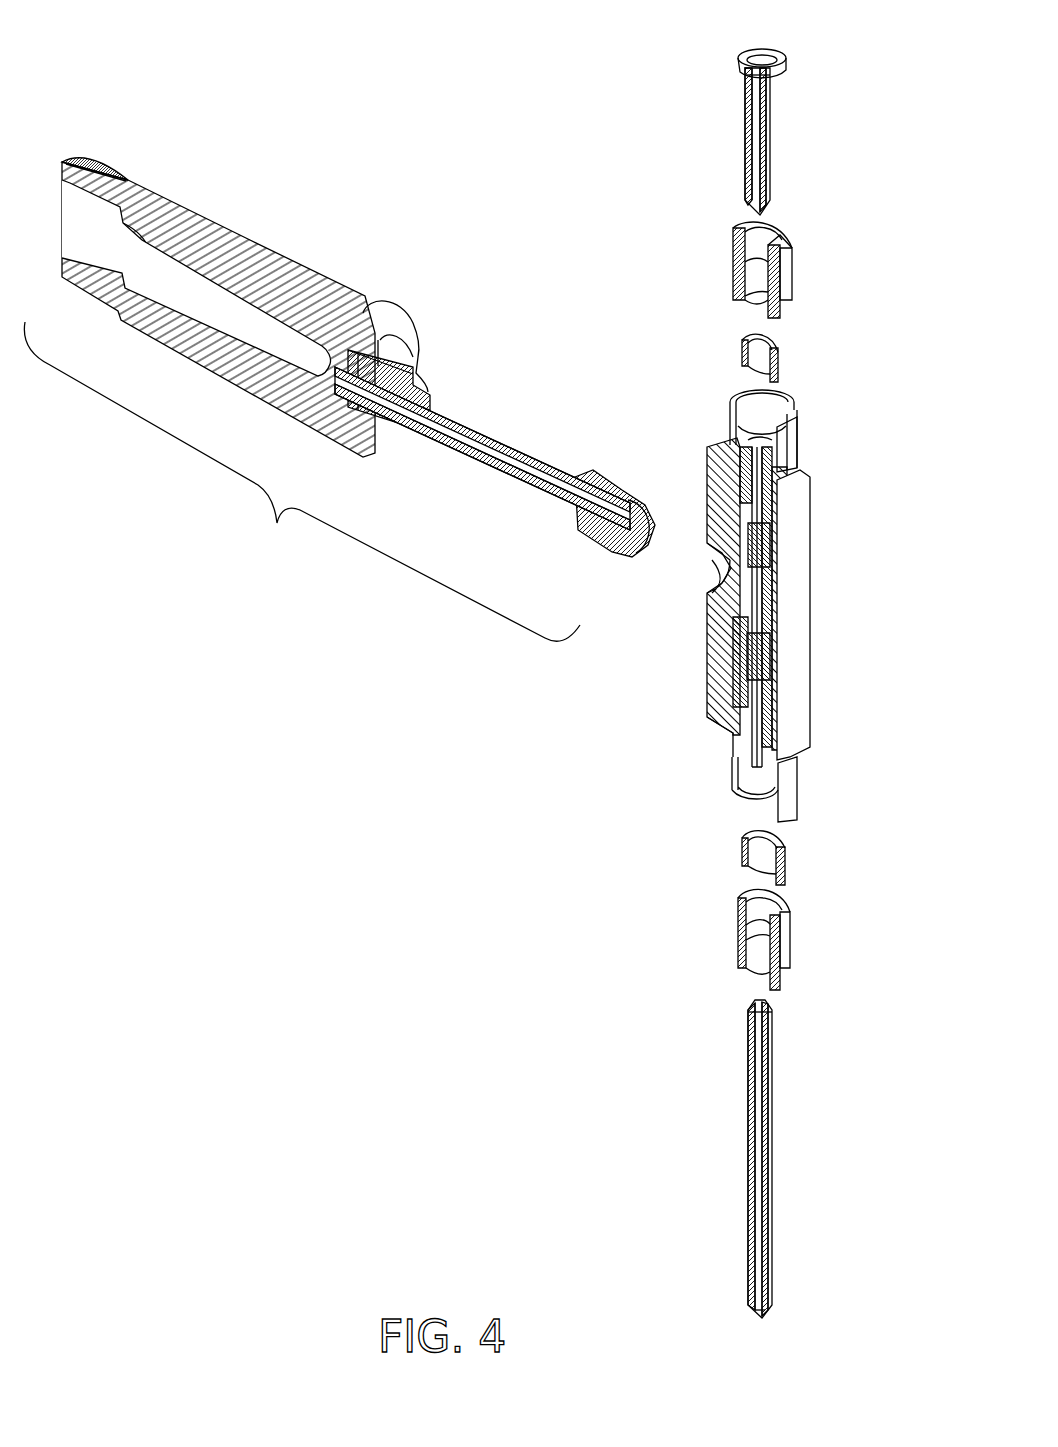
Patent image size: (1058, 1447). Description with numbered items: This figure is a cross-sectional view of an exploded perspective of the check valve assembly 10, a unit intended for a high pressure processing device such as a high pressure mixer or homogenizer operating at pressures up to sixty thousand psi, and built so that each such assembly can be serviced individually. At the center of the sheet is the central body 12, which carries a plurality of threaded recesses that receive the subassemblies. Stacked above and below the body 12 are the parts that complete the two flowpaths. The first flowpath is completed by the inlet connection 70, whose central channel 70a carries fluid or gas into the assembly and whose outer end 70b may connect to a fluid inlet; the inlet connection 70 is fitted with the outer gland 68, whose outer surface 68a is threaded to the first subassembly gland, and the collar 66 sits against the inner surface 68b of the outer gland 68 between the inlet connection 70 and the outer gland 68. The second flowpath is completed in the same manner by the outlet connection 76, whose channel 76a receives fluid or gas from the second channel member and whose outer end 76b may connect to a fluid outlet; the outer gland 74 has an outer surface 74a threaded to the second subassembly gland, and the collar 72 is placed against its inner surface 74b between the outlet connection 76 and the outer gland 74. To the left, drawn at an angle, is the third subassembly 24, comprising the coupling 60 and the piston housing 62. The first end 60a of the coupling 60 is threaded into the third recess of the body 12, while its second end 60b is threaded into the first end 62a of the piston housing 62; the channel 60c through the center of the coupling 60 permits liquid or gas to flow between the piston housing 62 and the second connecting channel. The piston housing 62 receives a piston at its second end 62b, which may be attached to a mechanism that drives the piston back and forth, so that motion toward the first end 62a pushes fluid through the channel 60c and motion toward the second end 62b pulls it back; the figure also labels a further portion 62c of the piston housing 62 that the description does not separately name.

The check valve assembly 10 is at (885, 213).
The central body 12 is at (795, 590).
The third subassembly 24 is at (302, 481).
The coupling 60 is at (507, 437).
The first end of coupling 60a is at (617, 493).
The second end of coupling 60b is at (423, 378).
The channel 60c is at (528, 490).
The piston housing 62 is at (268, 249).
The first end of piston housing 62a is at (393, 327).
The second end of piston housing 62b is at (64, 168).
The slot 62c is at (188, 287).
The collar 66 is at (780, 360).
The outer gland 68 is at (788, 278).
The outer surface of outer gland 68a is at (780, 307).
The inner surface of outer gland 68b is at (755, 288).
The inlet connection 70 is at (768, 143).
The central channel 70a is at (752, 120).
The outer end of inlet connection 70b is at (777, 53).
The collar 72 is at (775, 863).
The outer gland 74 is at (785, 935).
The outer surface of outer gland 74a is at (783, 920).
The inner surface of outer gland 74b is at (757, 912).
The outlet connection 76 is at (770, 1143).
The channel 76a is at (753, 1045).
The outer end of outlet connection 76b is at (765, 1313).